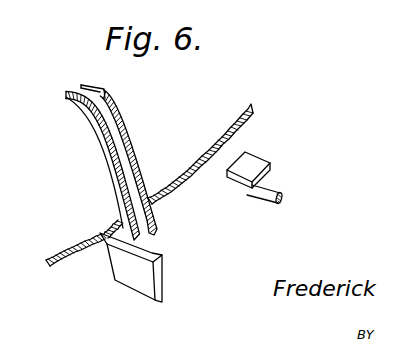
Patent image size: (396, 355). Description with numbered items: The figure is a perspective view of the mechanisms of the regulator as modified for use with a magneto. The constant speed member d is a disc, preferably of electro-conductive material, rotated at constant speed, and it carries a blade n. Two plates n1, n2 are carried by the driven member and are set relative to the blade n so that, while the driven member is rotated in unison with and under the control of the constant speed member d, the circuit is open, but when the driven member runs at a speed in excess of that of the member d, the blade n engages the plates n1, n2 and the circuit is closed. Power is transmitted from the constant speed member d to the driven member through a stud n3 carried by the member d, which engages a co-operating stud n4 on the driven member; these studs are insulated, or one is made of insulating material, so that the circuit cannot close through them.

The blade n is at (130, 262).
The plate n1 is at (117, 172).
The plate n2 is at (132, 157).
The stud n3 is at (253, 163).
The co-operating stud n4 is at (270, 184).
The constant speed member d is at (80, 248).